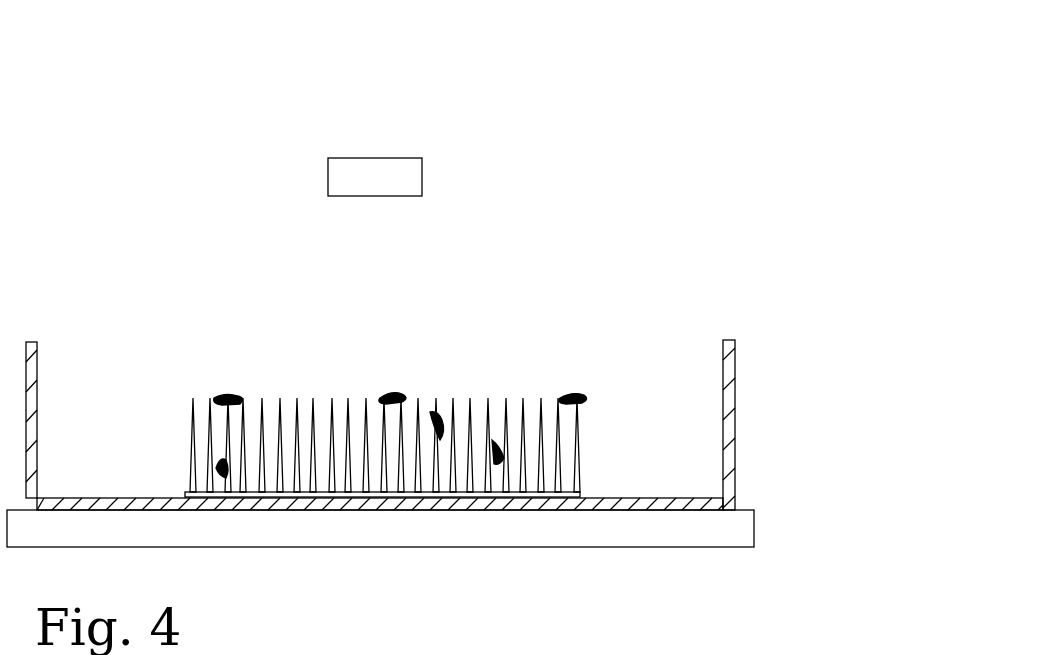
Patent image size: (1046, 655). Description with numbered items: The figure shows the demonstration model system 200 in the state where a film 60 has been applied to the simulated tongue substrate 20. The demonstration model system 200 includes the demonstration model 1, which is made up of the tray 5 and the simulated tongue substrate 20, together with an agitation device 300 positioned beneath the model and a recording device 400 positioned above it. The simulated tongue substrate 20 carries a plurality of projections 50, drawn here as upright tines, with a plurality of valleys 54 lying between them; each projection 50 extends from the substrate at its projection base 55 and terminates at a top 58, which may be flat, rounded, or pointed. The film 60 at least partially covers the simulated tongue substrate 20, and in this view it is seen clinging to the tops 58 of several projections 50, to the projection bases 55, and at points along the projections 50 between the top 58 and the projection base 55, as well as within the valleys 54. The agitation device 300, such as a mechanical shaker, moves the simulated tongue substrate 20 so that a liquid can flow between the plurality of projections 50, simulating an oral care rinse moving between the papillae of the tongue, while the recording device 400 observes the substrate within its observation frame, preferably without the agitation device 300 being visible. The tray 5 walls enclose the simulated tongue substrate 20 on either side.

The demonstration model 1 is at (410, 352).
The tray 5 is at (399, 425).
The simulated tongue substrate 20 is at (380, 381).
The projections 50 is at (298, 396).
The valleys 54 is at (532, 397).
The projection base 55 is at (582, 483).
The top 58 is at (178, 396).
The film 60 is at (394, 394).
The demonstration model system 200 is at (578, 115).
The agitation device 300 is at (523, 543).
The recording device 400 is at (390, 172).